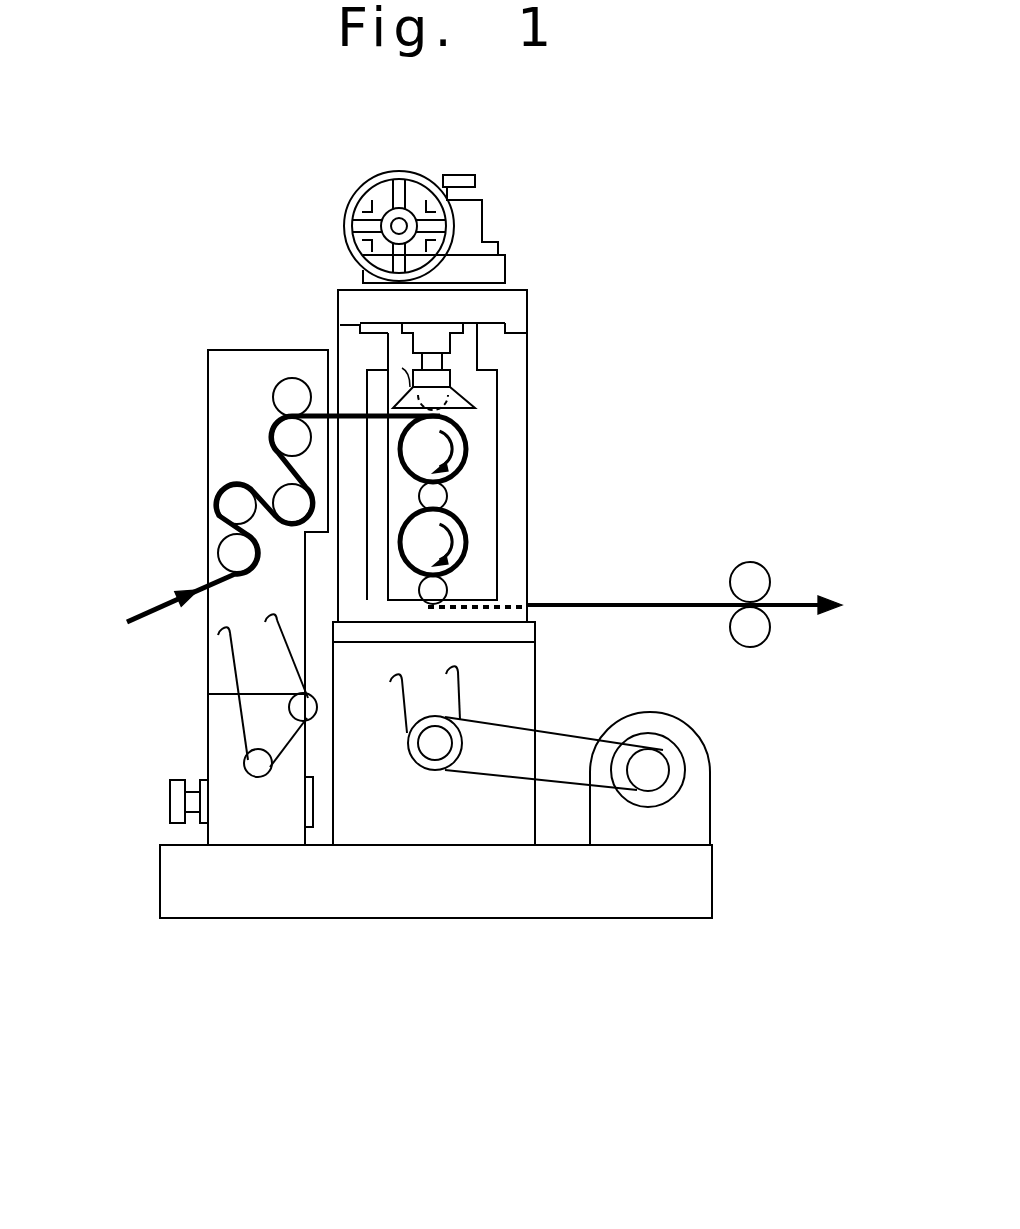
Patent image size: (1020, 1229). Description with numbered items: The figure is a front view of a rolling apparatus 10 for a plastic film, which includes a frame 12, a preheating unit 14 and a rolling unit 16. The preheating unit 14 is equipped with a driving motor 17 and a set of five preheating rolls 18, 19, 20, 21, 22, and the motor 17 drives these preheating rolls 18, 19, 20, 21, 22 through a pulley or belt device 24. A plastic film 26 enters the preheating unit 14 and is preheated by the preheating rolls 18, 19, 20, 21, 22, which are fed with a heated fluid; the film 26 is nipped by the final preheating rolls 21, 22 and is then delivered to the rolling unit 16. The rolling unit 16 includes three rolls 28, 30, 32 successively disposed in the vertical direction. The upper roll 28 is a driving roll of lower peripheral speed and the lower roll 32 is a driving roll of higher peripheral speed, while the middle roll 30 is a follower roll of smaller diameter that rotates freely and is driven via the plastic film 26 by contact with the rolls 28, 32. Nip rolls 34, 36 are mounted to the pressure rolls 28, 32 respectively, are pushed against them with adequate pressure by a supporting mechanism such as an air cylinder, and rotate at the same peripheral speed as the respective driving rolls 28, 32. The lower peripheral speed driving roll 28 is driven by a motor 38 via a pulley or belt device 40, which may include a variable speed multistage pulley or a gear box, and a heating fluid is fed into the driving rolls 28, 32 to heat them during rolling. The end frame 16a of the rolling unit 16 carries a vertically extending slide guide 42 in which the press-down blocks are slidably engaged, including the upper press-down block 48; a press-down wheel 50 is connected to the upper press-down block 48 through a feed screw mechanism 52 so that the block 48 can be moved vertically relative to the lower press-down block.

The rolling apparatus 10 is at (514, 232).
The frame 12 is at (458, 900).
The preheating unit 14 is at (268, 350).
The rolling unit 16 is at (517, 288).
The end frame 16a is at (513, 347).
The driving motor 17 is at (241, 808).
The preheating roll 18 is at (228, 556).
The preheating roll 19 is at (228, 502).
The preheating roll 20 is at (278, 497).
The preheating roll 21 is at (278, 435).
The preheating roll 22 is at (262, 392).
The pulley or belt device 24 is at (236, 712).
The plastic film 26 is at (148, 610).
The lower peripheral speed driving roll 28 is at (470, 448).
The follower roll 30 is at (445, 500).
The higher peripheral speed driving roll 32 is at (470, 548).
The nip roll 34 is at (467, 395).
The nip roll 36 is at (448, 590).
The motor 38 is at (680, 820).
The pulley or belt device 40 is at (460, 700).
The slide guide 42 is at (367, 378).
The upper press-down block 48 is at (402, 368).
The press-down wheel 50 is at (355, 192).
The feed screw mechanism 52 is at (423, 338).